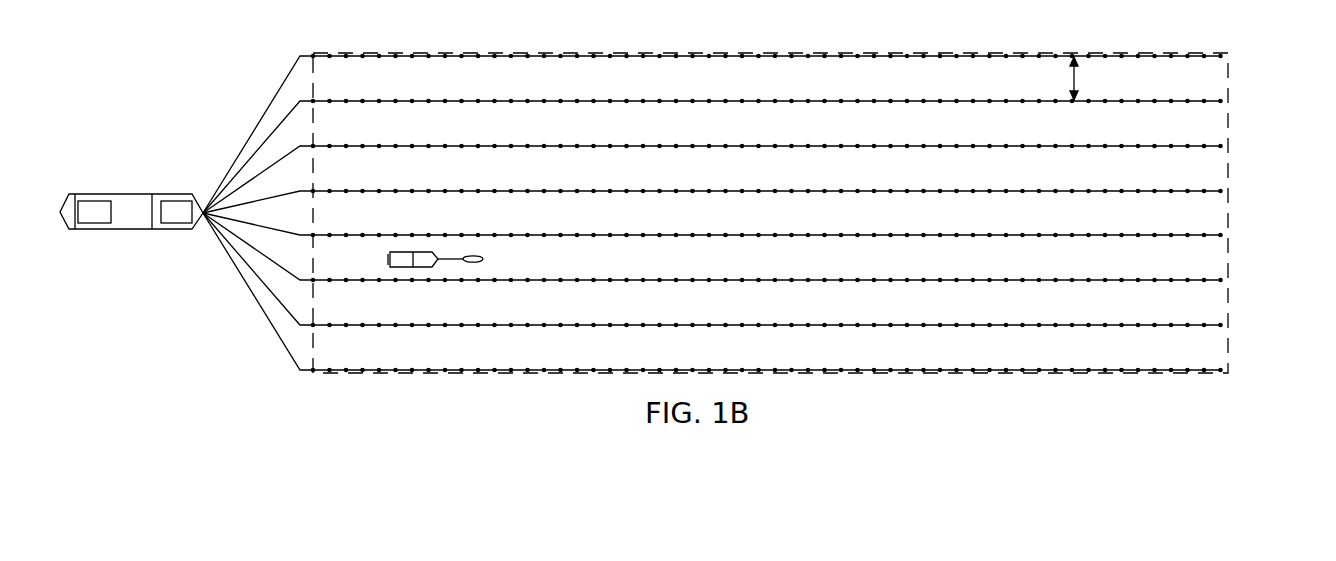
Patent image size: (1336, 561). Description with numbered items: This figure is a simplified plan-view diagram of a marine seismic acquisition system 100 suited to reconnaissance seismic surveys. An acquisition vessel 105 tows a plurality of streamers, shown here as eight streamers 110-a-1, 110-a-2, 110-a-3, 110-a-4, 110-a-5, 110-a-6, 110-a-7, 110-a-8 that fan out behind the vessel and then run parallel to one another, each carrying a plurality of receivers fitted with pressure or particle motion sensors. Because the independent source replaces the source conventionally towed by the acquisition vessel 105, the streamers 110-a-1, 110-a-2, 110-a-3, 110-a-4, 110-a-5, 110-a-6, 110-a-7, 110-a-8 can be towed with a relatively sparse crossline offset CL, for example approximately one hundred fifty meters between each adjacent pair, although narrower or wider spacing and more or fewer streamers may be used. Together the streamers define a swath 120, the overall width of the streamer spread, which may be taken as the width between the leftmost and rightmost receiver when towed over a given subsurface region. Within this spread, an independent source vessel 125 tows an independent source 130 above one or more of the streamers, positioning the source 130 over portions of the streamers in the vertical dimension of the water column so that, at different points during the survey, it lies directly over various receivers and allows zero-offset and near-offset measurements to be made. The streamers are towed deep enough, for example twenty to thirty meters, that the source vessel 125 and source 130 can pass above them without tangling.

The marine seismic acquisition system 100 is at (887, 30).
The acquisition vessel 105 is at (100, 194).
The streamer 110-a-1 is at (1203, 58).
The streamer 110-a-2 is at (1203, 103).
The streamer 110-a-3 is at (1203, 148).
The streamer 110-a-4 is at (1203, 193).
The streamer 110-a-5 is at (1203, 237).
The streamer 110-a-6 is at (1203, 282).
The streamer 110-a-7 is at (1203, 327).
The streamer 110-a-8 is at (1203, 372).
The swath 120 is at (1078, 55).
The independent source vessel 125 is at (390, 258).
The independent source 130 is at (483, 259).